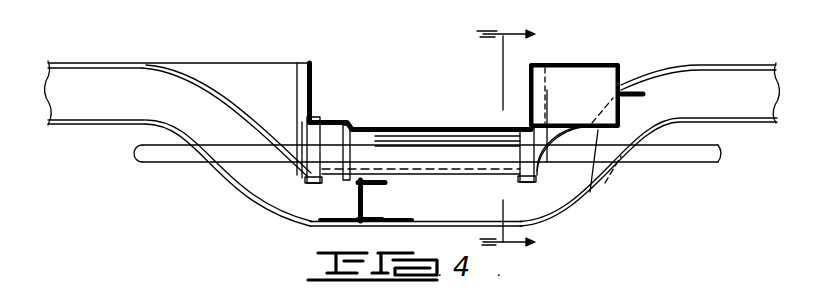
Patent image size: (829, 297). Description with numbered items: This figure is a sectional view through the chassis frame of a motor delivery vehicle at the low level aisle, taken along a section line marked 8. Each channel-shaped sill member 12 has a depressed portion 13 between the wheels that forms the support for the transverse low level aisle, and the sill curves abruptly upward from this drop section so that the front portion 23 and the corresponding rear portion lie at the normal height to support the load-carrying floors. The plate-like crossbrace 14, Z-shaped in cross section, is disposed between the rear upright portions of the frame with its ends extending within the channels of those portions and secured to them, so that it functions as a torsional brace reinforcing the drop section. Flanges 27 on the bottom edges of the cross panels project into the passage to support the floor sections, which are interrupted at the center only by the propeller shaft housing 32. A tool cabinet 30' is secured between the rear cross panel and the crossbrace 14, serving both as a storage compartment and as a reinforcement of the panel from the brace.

The section line 8- 8 is at (518, 139).
The sill member 12 is at (752, 113).
The depressed portion 13 is at (566, 199).
The crossbrace 14 is at (627, 110).
The front portion 23 is at (140, 70).
The flanges 27 is at (306, 182).
The tool cabinet 30' is at (599, 93).
The propeller shaft housing 32 is at (406, 126).